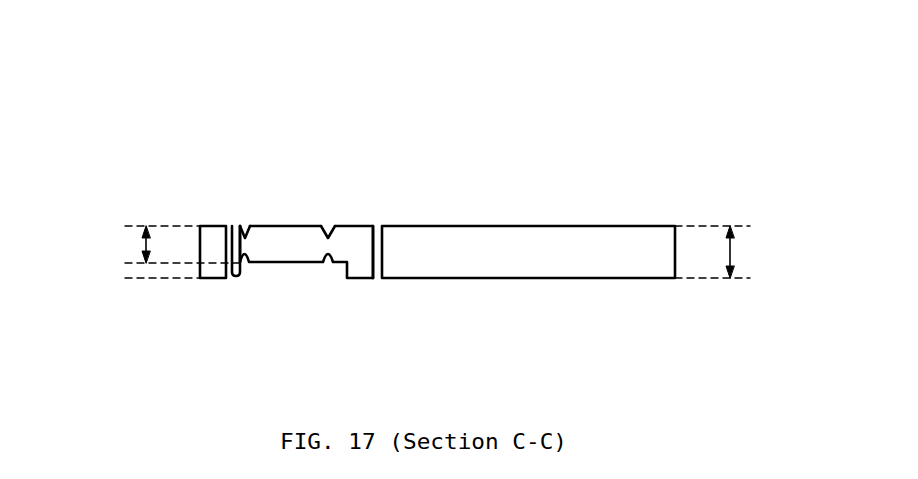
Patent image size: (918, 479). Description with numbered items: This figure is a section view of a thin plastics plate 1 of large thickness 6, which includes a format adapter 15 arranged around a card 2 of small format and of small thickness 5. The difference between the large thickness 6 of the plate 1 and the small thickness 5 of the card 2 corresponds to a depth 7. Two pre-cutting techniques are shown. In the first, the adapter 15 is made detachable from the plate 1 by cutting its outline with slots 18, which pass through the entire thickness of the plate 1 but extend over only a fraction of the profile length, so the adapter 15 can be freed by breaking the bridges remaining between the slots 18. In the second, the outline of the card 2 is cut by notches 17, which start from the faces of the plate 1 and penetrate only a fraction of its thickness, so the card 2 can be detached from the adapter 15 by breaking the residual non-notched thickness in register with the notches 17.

The plate 1 is at (493, 243).
The card 2 is at (287, 252).
The format adapter 15 is at (356, 236).
The notch 17 is at (326, 229).
The slot 18 is at (229, 226).
The small thickness 5 is at (176, 244).
The large thickness 6 is at (723, 252).
The depth 7 is at (146, 265).